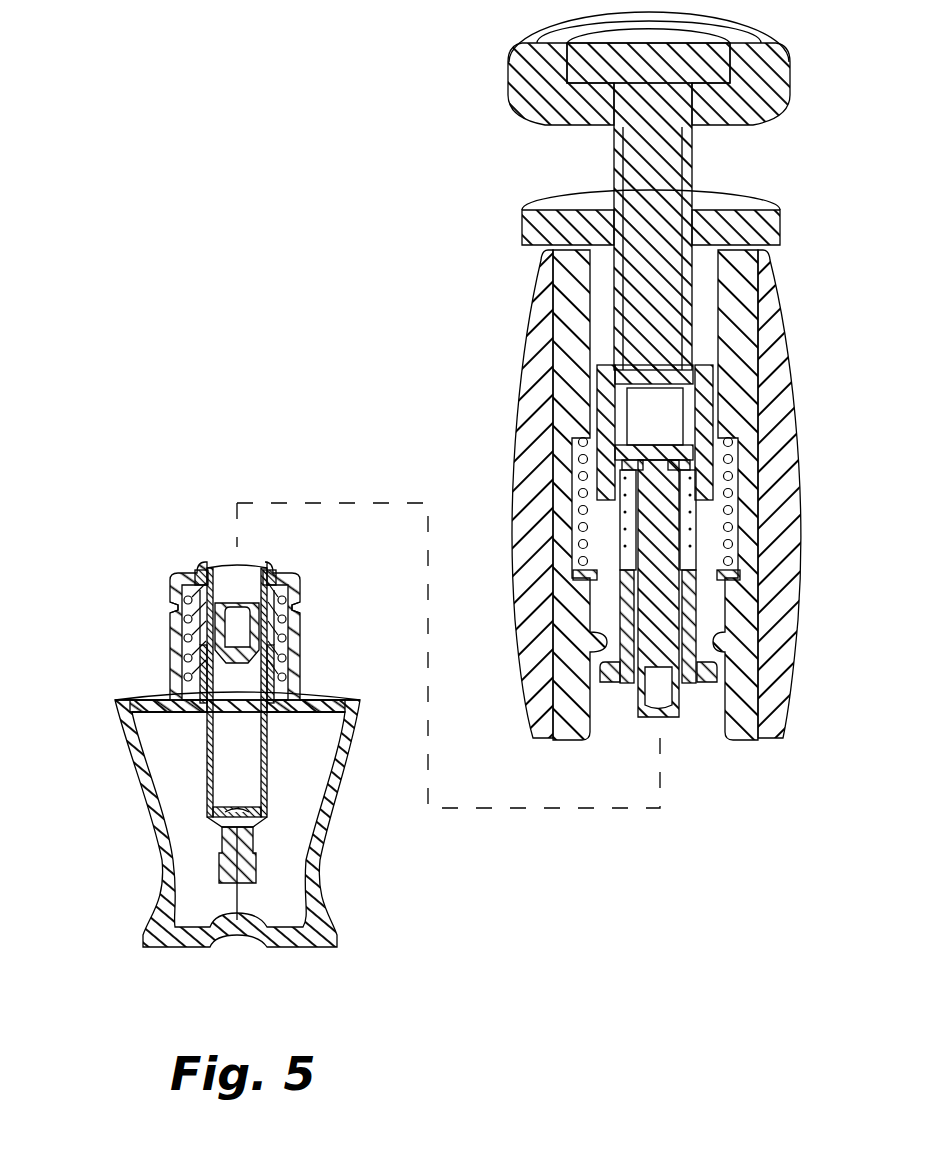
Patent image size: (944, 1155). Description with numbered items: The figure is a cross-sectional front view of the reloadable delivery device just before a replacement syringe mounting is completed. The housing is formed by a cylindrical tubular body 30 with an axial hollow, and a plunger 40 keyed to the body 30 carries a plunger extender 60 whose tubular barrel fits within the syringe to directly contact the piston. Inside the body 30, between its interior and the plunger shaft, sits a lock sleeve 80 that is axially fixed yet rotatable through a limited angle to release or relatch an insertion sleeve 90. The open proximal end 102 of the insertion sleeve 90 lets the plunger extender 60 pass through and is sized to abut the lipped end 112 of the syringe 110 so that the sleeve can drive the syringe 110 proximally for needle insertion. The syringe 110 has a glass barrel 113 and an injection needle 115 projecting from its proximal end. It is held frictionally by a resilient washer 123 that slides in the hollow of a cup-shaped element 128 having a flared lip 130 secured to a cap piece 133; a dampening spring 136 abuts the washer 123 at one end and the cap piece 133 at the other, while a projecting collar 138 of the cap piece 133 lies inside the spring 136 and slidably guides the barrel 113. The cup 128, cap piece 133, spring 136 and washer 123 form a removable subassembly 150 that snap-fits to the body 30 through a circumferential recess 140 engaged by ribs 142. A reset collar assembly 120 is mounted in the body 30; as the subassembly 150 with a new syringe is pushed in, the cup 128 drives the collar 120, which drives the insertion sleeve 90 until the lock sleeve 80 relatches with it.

The cylindrical tubular body 30 is at (733, 341).
The plunger 40 is at (762, 124).
The plunger extender 60 is at (674, 718).
The lock sleeve 80 is at (720, 422).
The insertion sleeve 90 is at (703, 596).
The proximal end of insertion sleeve 102 is at (630, 684).
The reset collar assembly 120 is at (705, 683).
The ribs 142 is at (606, 642).
The syringe 110 is at (268, 782).
The lipped end of syringe 112 is at (207, 568).
The glass barrel 113 is at (206, 770).
The injection needle 115 is at (236, 907).
The resilient washer 123 is at (182, 598).
The cup-shaped element 128 is at (301, 593).
The flared lip 130 is at (120, 723).
The cap piece 133 is at (283, 713).
The dampening spring 136 is at (284, 633).
The projecting collar 138 is at (203, 683).
The circumferential recess 140 is at (302, 610).
The removable subassembly 150 is at (114, 768).